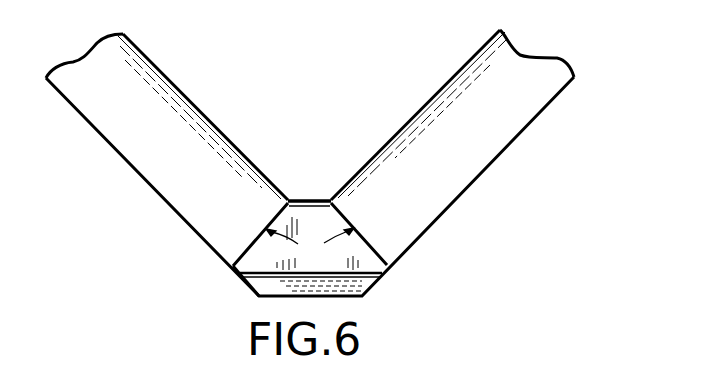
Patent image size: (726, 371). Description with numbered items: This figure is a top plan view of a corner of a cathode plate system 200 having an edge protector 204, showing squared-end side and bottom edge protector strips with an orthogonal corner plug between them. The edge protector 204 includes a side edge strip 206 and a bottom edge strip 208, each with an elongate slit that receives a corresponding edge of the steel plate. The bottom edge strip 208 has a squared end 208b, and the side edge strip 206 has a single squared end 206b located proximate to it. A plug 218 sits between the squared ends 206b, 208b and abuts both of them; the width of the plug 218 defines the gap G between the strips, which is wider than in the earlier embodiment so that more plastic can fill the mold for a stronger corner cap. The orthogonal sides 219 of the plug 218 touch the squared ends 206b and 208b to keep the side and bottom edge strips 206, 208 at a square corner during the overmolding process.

The cathode plate system 200 is at (273, 145).
The edge protector 204 is at (453, 77).
The side edge strip 206 is at (181, 88).
The bottom edge strip 208 is at (403, 127).
The plug 218 is at (308, 224).
The orthogonal sides 219 is at (250, 270).
The squared end 206b is at (250, 270).
The squared ends 208b is at (378, 276).